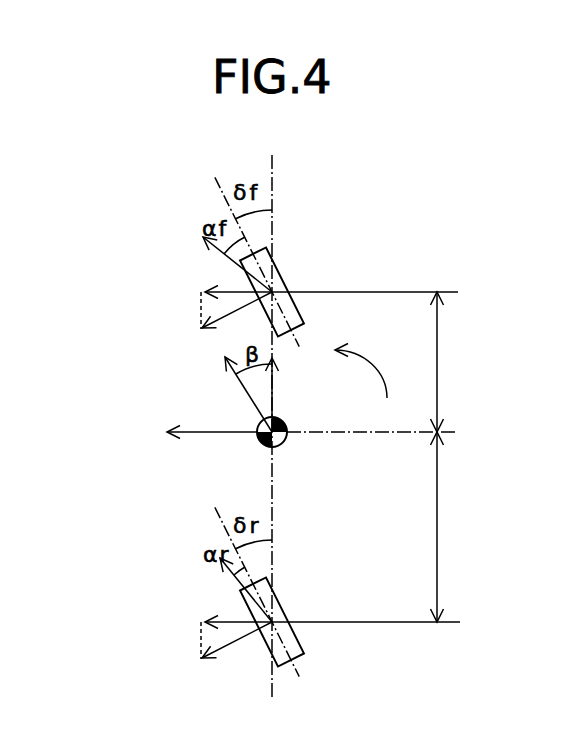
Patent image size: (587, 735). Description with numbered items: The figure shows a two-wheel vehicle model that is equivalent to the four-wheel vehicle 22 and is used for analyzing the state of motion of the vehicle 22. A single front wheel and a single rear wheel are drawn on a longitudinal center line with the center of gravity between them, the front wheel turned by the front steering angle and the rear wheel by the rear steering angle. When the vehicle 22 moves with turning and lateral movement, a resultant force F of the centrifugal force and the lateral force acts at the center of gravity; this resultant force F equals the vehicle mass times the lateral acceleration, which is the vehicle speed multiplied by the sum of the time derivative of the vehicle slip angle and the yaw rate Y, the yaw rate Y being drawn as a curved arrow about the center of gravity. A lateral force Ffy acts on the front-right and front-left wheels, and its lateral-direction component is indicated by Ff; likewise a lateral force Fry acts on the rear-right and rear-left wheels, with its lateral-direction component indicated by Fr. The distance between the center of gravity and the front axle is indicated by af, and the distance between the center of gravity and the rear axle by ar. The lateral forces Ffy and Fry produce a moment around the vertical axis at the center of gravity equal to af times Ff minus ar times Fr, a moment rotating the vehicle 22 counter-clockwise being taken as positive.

The vehicle 22 is at (333, 253).
The distance between center of gravity and front axle af is at (454, 362).
The distance between center of gravity and rear axle ar is at (454, 527).
The resultant force F is at (145, 455).
The yaw rate Y is at (361, 370).
The lateral-direction component of front wheel lateral force Ff is at (220, 289).
The lateral force acting on front wheels Ffy is at (218, 321).
The lateral-direction component of rear wheel lateral force Fr is at (220, 619).
The lateral force acting on rear wheels Fry is at (218, 654).